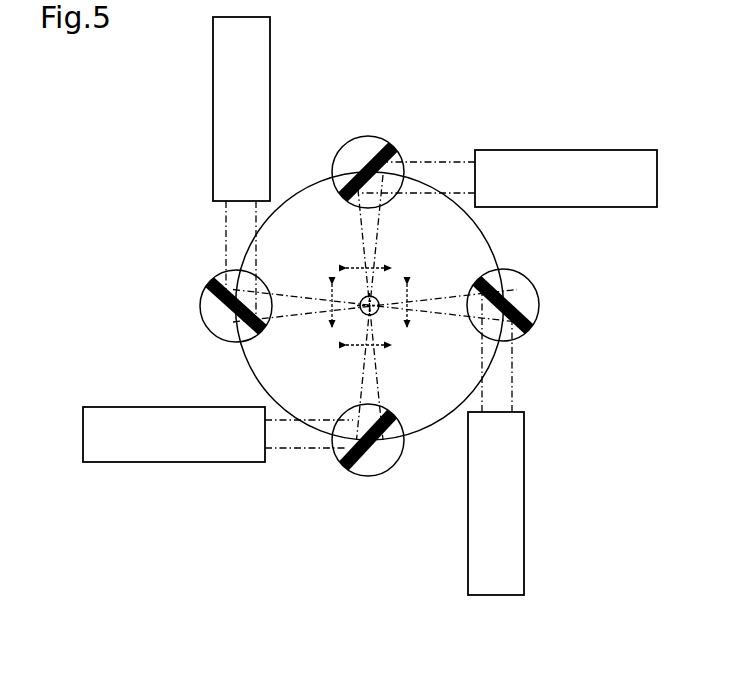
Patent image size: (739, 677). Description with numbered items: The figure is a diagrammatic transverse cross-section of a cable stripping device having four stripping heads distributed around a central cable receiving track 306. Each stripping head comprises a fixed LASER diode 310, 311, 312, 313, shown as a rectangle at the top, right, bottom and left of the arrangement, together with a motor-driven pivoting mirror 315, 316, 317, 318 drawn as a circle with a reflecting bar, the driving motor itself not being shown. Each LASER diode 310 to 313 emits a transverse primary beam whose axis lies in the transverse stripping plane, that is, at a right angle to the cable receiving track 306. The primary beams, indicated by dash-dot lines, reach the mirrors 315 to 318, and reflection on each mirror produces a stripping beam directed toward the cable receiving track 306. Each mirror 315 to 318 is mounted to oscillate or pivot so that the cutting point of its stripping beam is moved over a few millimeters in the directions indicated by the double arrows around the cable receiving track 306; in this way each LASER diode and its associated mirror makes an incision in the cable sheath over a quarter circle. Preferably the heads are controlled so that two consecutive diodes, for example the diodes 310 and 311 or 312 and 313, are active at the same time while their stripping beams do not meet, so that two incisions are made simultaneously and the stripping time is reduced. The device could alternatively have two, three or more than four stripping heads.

The cable receiving track 306 is at (382, 316).
The LASER diode 310 is at (562, 161).
The LASER diode 311 is at (222, 108).
The LASER diode 312 is at (173, 453).
The LASER diode 313 is at (517, 500).
The pivoting mirror 315 is at (352, 136).
The pivoting mirror 316 is at (203, 322).
The pivoting mirror 317 is at (370, 468).
The pivoting mirror 318 is at (540, 298).